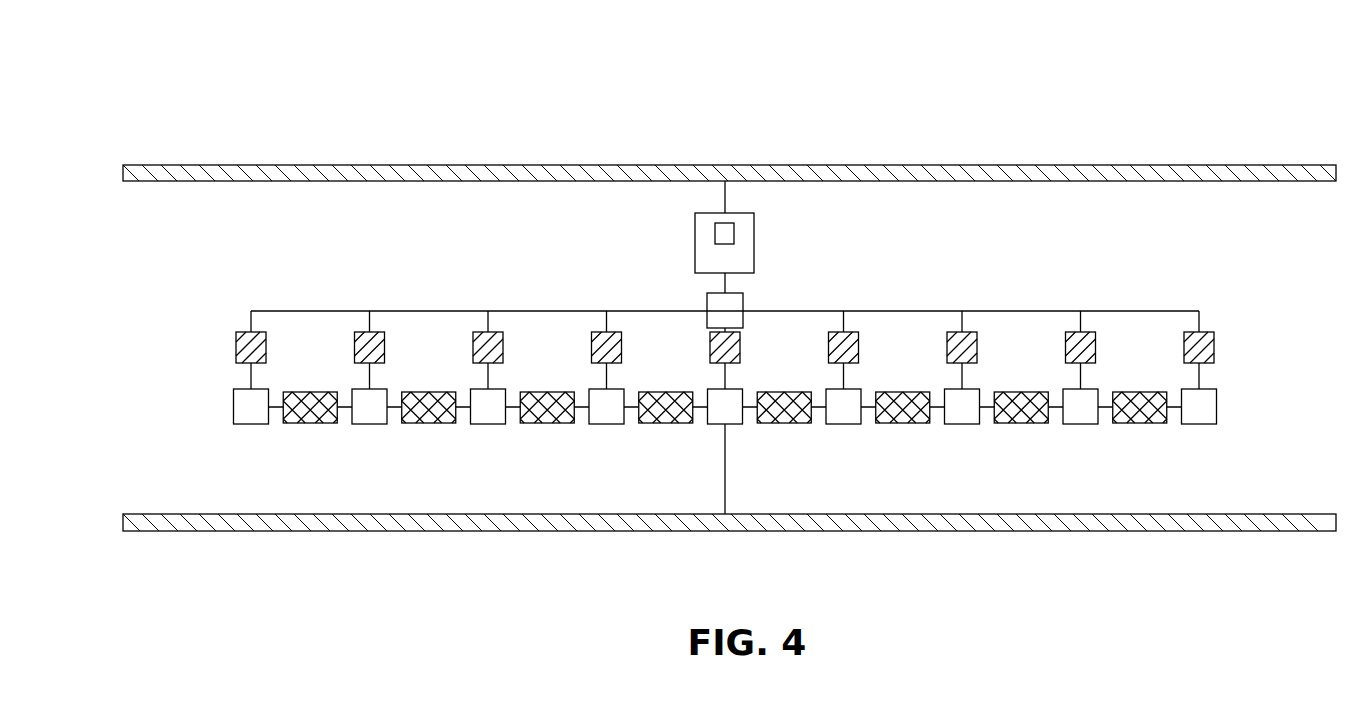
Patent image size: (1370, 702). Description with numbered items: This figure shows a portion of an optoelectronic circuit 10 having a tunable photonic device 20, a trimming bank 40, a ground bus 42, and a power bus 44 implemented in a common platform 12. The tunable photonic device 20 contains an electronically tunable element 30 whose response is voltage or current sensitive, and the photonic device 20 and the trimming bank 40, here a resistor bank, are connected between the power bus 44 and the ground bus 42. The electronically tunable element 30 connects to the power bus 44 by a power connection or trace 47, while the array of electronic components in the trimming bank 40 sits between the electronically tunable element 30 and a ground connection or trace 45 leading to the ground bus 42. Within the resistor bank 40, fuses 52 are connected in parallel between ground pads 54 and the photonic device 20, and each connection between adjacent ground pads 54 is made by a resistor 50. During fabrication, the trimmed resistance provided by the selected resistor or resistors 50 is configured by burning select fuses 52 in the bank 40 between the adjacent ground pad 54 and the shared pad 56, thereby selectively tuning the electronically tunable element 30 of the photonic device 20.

The optoelectronic circuit 10 is at (167, 92).
The common platform 12 is at (740, 139).
The tunable photonic device 20 is at (680, 243).
The electronically tunable element 30 is at (734, 237).
The trimming bank 40 is at (1222, 303).
The ground bus 42 is at (1103, 531).
The power bus 44 is at (1097, 163).
The ground connection or trace 45 is at (727, 484).
The power connection or trace 47 is at (1000, 311).
The resistor 50 is at (305, 423).
The fuse 52 is at (236, 348).
The ground pad 54 is at (253, 424).
The shared pad 56 is at (743, 303).